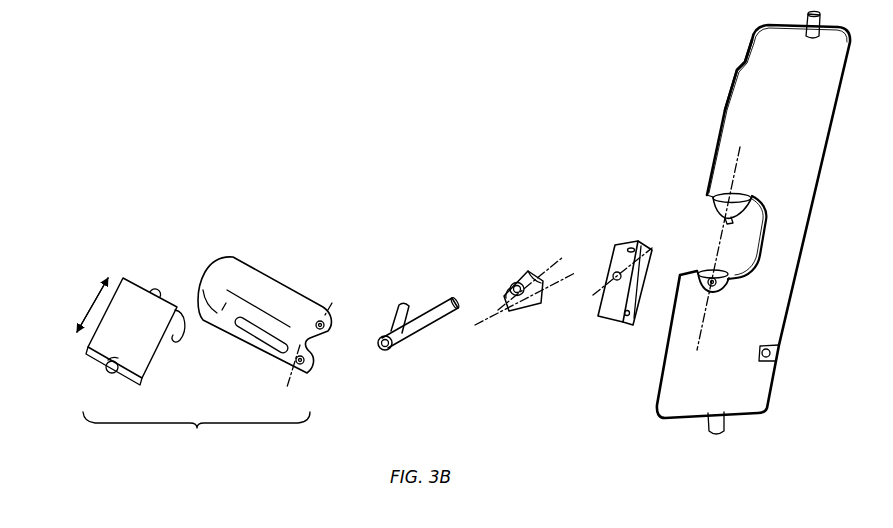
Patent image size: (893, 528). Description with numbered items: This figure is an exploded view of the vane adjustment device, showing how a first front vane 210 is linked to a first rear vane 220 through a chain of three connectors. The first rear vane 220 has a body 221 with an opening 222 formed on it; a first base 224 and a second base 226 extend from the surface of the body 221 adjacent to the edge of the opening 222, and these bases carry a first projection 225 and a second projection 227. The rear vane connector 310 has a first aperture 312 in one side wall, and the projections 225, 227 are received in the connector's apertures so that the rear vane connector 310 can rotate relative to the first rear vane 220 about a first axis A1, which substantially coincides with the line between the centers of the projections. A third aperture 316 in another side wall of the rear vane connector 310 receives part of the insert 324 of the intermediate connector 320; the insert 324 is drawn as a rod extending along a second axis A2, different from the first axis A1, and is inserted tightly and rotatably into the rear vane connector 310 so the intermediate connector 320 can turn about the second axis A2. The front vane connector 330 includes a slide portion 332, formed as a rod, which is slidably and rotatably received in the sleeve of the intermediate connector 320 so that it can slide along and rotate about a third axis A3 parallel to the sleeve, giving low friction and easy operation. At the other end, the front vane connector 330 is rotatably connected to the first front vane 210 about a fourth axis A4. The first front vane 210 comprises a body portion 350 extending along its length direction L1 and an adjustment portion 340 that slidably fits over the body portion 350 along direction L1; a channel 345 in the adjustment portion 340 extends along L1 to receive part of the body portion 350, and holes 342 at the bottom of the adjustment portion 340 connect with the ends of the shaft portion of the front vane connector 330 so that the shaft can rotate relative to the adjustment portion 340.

The first front vane 210 is at (196, 434).
The first rear vane 220 is at (747, 417).
The body 221 is at (755, 85).
The opening 222 is at (737, 254).
The first base 224 is at (740, 202).
The first projection 225 is at (728, 220).
The second base 226 is at (735, 280).
The second projection 227 is at (717, 288).
The rear vane connector 310 is at (638, 280).
The first aperture 312 is at (636, 243).
The third aperture 316 is at (632, 268).
The intermediate connector 320 is at (525, 296).
The insert 324 is at (515, 280).
The front vane connector 330 is at (420, 314).
The slide portion 332 is at (433, 310).
The adjustment portion 340 is at (287, 317).
The holes 342 is at (327, 323).
The channel 345 is at (258, 330).
The body portion 350 is at (125, 382).
The first axis A1 is at (725, 237).
The second axis A2 is at (588, 270).
The third axis A3 is at (536, 290).
The fourth axis A4 is at (318, 335).
The length direction L1 is at (88, 305).